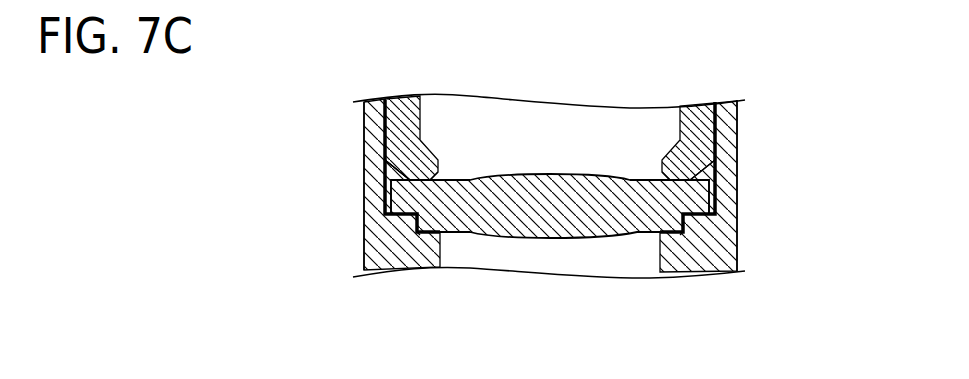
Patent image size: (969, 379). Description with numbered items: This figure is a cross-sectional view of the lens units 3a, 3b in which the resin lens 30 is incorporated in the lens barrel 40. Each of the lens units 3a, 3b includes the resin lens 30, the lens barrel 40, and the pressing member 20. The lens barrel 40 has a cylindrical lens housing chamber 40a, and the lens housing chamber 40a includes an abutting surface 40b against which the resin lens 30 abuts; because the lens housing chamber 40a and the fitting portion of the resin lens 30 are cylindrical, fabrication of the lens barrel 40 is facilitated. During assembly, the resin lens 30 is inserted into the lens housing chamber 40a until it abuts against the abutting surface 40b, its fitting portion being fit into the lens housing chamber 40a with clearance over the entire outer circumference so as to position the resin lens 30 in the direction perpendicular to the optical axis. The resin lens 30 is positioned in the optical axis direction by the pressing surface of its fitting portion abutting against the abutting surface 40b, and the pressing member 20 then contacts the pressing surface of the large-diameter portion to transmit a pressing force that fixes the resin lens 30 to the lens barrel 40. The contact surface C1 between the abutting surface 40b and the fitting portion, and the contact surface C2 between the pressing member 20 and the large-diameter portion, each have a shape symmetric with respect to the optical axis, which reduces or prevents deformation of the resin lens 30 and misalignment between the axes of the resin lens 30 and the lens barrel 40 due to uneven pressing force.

The lens unit 3a is at (518, 147).
The lens unit 3b is at (358, 81).
The pressing member 20 is at (712, 124).
The resin lens 30 is at (705, 203).
The lens barrel 40 is at (718, 244).
The lens housing chamber 40a is at (390, 172).
The abutting surface 40b is at (429, 233).
The contact surface C1 is at (422, 241).
The contact surface C2 is at (430, 174).